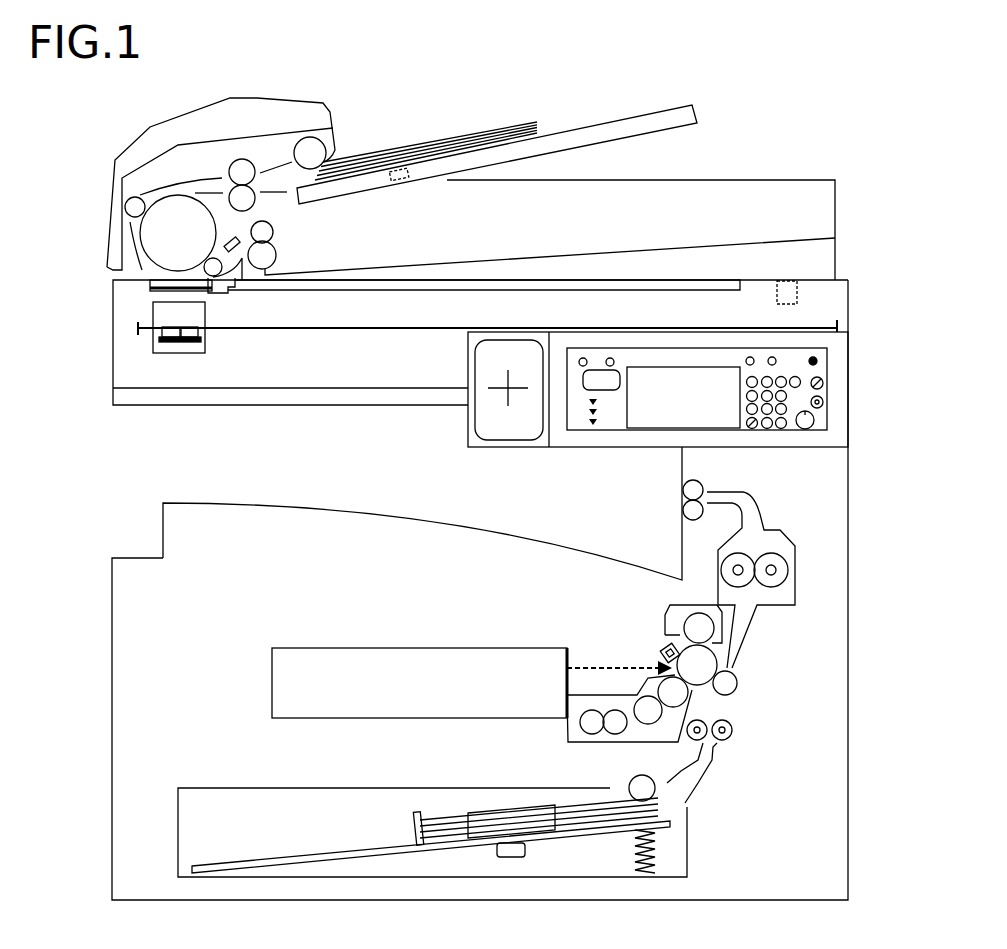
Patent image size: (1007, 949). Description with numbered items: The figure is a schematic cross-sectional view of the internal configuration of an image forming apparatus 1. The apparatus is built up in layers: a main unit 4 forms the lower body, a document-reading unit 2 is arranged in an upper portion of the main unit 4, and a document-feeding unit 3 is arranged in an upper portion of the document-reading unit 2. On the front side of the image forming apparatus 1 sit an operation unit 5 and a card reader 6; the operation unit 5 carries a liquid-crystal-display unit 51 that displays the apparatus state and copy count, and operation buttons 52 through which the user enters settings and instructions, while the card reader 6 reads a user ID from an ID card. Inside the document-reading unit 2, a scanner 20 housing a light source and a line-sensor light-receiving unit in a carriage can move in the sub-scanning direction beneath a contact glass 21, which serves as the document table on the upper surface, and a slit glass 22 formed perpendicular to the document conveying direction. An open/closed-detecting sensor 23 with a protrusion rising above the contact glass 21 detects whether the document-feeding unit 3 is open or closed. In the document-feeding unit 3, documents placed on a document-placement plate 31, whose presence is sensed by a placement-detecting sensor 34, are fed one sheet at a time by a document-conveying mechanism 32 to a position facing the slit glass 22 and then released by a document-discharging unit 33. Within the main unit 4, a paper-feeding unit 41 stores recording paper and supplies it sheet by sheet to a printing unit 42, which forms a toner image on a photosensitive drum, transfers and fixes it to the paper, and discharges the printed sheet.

The image forming apparatus 1 is at (772, 66).
The document-reading unit 2 is at (80, 332).
The document-feeding unit 3 is at (80, 199).
The main unit 4 is at (80, 634).
The operation unit 5 is at (913, 320).
The card reader 6 is at (483, 425).
The scanner 20 is at (236, 349).
The contact glass 21 is at (452, 289).
The slit glass 22 is at (150, 284).
The open/closed-detecting sensor 23 is at (798, 291).
The document-placement plate 31 is at (662, 108).
The document-conveying mechanism 32 is at (257, 98).
The document-discharging unit 33 is at (565, 248).
The placement-detecting sensor 34 is at (405, 180).
The paper-feeding unit 41 is at (683, 832).
The printing unit 42 is at (630, 631).
The liquid-crystal-display unit 51 is at (718, 378).
The operation buttons 52 is at (795, 385).